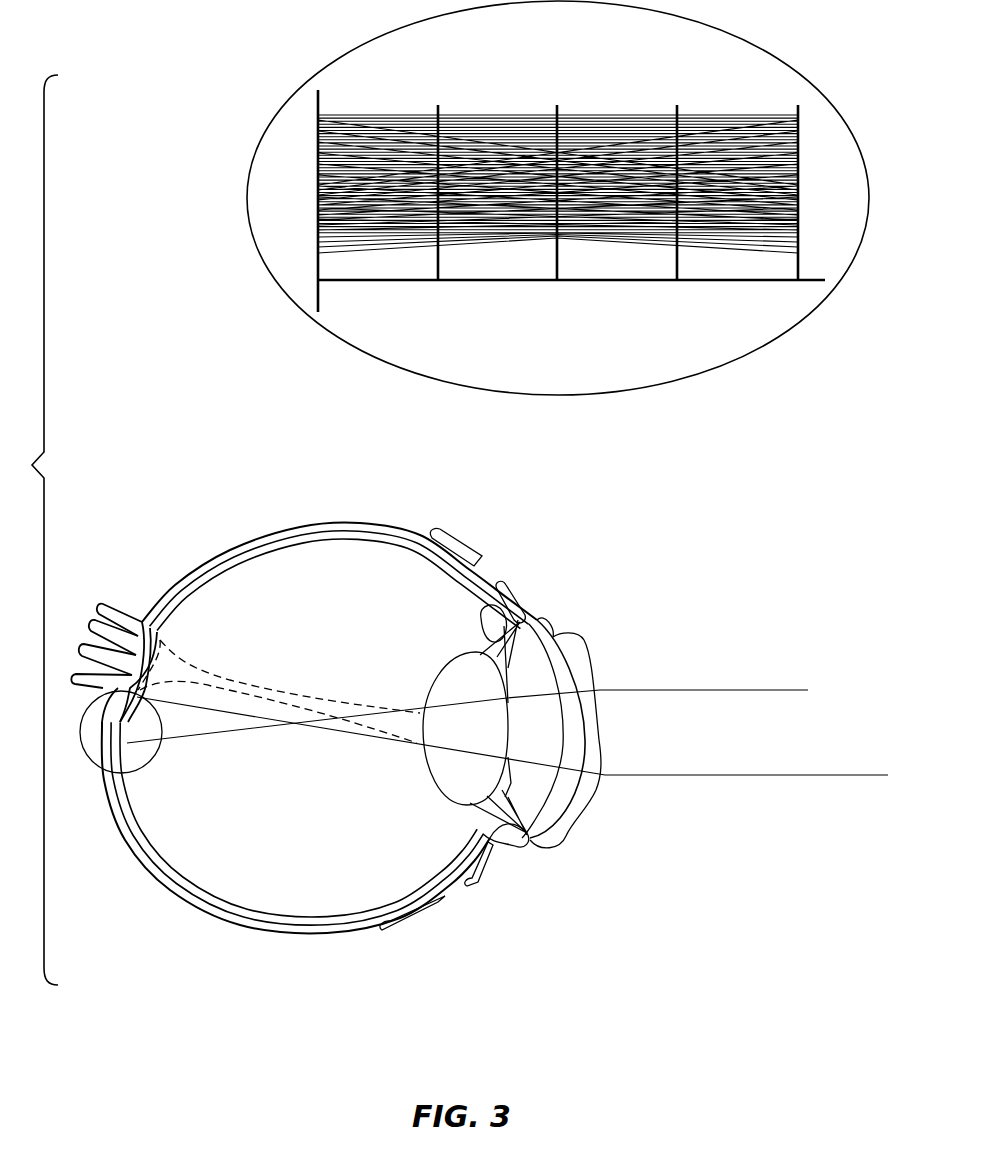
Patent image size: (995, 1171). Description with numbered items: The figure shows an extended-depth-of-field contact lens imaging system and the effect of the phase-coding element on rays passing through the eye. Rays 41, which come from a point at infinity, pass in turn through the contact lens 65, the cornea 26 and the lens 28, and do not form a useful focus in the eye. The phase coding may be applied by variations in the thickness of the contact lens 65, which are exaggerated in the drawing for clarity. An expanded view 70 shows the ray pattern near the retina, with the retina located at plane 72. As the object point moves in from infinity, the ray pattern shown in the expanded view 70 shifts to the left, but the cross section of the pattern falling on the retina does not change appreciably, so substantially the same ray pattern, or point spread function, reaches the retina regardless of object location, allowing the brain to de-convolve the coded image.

The expanded view 70 is at (262, 258).
The plane 72 is at (493, 333).
The contact lens 65 is at (573, 655).
The rays 41 is at (808, 690).
The cornea 26 is at (558, 784).
The lens 28 is at (527, 834).